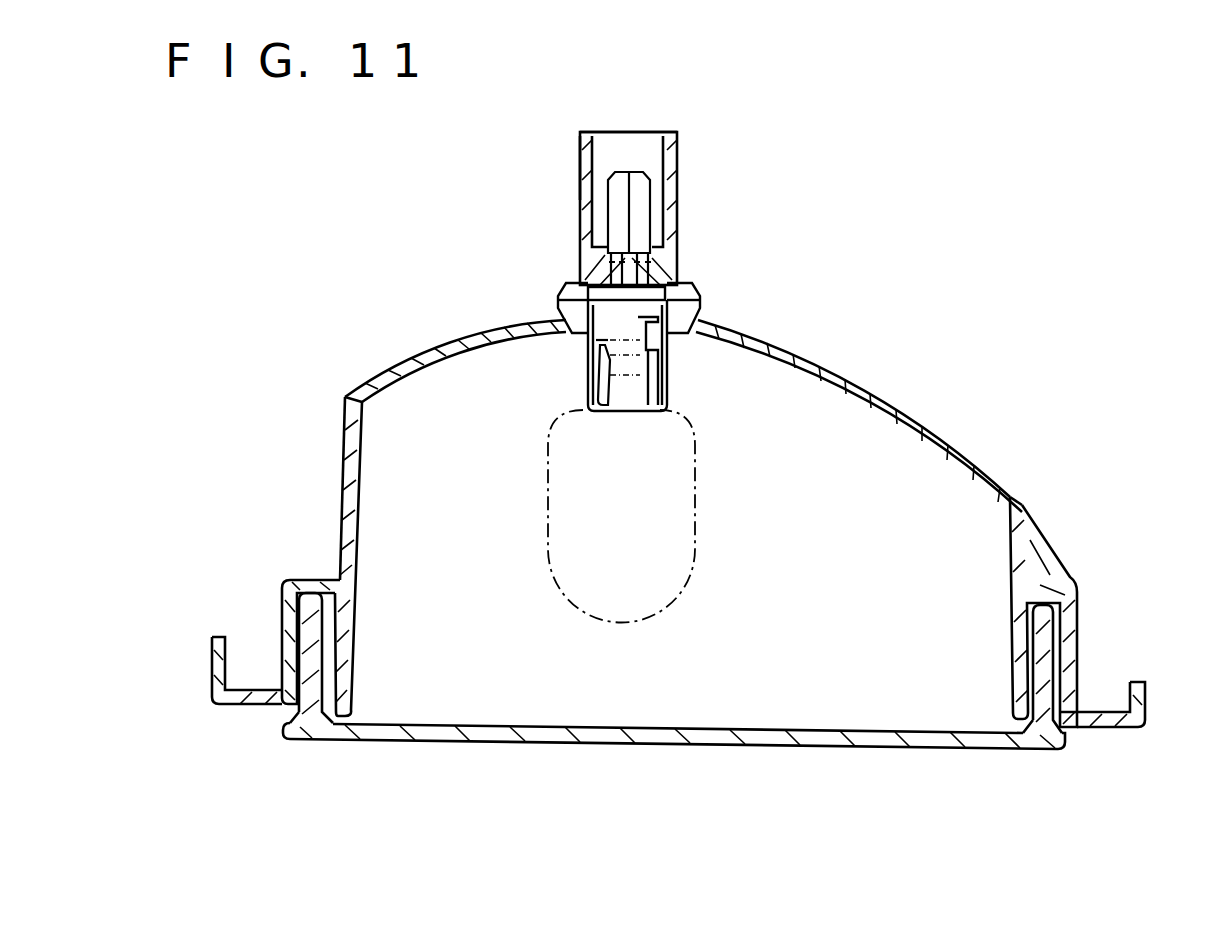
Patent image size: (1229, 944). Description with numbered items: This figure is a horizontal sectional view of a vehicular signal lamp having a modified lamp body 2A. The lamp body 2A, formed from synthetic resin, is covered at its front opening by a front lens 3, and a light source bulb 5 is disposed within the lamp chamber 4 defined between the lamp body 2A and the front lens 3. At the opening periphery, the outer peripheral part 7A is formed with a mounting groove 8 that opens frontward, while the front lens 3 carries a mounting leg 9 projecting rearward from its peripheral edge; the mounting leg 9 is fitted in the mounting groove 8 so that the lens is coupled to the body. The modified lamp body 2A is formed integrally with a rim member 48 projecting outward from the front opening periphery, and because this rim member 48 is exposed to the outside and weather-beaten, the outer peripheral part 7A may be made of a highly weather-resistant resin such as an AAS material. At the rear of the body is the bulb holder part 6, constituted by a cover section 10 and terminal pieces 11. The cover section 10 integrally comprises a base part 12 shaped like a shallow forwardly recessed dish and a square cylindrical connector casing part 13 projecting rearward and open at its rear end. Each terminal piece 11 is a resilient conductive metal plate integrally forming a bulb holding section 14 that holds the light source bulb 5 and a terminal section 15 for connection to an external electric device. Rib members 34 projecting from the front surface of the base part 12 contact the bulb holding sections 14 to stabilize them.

The modified lamp body 2A is at (840, 365).
The outer peripheral part 7A is at (440, 345).
The front lens 3 is at (743, 748).
The lamp chamber 4 is at (725, 680).
The light source bulb 5 is at (700, 535).
The bulb holder part 6 is at (678, 186).
The mounting groove 8 is at (1055, 636).
The mounting leg 9 is at (1043, 680).
The cover section 10 is at (580, 146).
The terminal piece 11 is at (692, 290).
The base part 12 is at (576, 284).
The connector casing part 13 is at (677, 134).
The bulb holding section 14 is at (583, 402).
The terminal section 15 is at (622, 172).
The rib member 34 is at (576, 343).
The rim member 48 is at (258, 704).